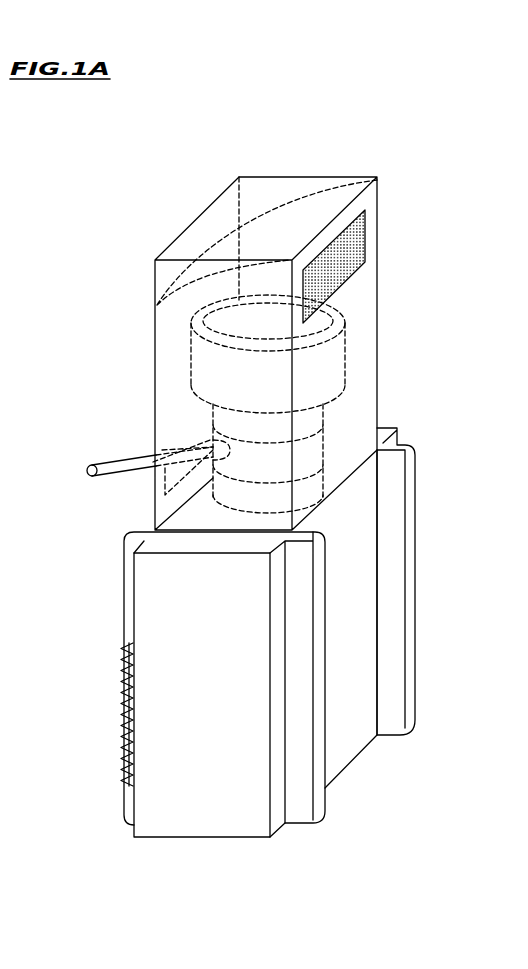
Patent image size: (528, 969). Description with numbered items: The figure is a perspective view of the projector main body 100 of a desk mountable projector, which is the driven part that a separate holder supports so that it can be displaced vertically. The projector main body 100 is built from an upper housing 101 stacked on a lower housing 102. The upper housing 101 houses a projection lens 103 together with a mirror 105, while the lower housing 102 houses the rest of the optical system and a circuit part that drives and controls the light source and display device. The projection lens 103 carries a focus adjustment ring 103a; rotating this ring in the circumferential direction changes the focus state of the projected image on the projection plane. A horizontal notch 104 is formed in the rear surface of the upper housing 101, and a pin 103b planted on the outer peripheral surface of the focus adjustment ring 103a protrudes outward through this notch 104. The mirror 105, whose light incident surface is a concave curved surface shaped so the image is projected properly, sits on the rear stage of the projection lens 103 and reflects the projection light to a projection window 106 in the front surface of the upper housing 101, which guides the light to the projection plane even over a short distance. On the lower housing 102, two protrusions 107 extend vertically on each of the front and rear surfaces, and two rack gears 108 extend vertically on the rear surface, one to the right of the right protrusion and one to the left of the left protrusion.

The projector main body 100 is at (113, 250).
The upper housing 101 is at (165, 360).
The lower housing 102 is at (158, 638).
The projection lens 103 is at (343, 340).
The focus adjustment ring 103a is at (323, 428).
The pin 103b is at (100, 462).
The horizontal notch 104 is at (213, 440).
The mirror 105 is at (232, 246).
The projection window 106 is at (365, 242).
The protrusions 107 is at (128, 547).
The rack gears 108 is at (122, 716).